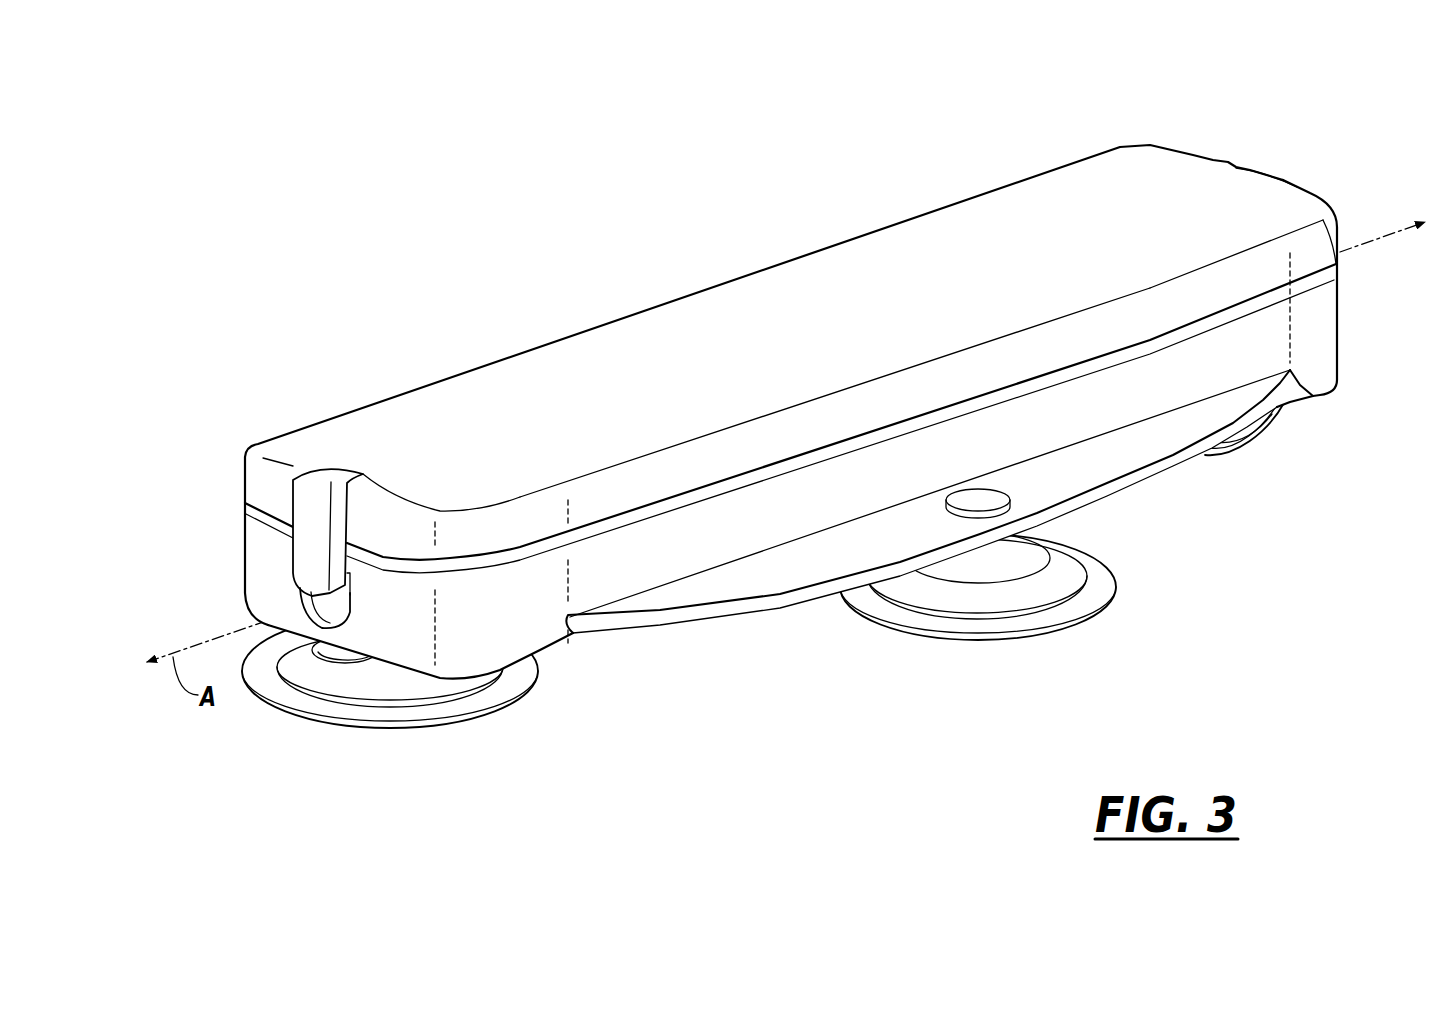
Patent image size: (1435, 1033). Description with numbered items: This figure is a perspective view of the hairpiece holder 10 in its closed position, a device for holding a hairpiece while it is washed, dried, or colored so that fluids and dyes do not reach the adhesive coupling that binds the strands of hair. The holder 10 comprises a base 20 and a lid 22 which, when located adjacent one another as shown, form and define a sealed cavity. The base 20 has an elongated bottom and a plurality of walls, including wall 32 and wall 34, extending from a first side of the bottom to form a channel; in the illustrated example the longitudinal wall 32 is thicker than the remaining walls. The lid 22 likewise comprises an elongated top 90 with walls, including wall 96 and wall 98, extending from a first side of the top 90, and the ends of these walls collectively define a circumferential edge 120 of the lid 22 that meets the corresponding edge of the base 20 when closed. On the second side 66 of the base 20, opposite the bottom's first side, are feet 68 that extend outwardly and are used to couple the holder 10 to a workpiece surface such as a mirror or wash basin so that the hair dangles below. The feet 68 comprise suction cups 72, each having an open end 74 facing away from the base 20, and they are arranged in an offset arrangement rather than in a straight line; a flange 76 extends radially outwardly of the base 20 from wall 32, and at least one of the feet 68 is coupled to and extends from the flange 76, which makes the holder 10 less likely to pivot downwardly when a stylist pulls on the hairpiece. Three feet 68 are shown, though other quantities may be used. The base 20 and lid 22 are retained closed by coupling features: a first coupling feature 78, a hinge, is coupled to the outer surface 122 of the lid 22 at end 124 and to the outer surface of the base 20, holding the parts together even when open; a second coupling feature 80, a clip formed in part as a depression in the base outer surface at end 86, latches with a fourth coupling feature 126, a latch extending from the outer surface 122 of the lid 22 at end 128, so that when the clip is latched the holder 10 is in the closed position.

The hairpiece holder 10 is at (458, 158).
The base 20 is at (1343, 323).
The lid 22 is at (1106, 182).
The wall 32 is at (1287, 340).
The wall 34 is at (267, 577).
The second side 66 is at (560, 643).
The feet 68 is at (460, 733).
The suction cups 72 is at (333, 705).
The open end 74 is at (383, 730).
The flange 76 is at (777, 569).
The first coupling feature 78 is at (1280, 176).
The second coupling feature 80 is at (354, 613).
The end 86 is at (257, 537).
The top 90 is at (855, 266).
The wall 96 is at (1004, 343).
The wall 98 is at (399, 532).
The circumferential edge 120 is at (561, 528).
The outer surface 122 is at (1223, 277).
The end 124 is at (1323, 240).
The fourth coupling feature 126 is at (320, 500).
The end 128 is at (287, 487).